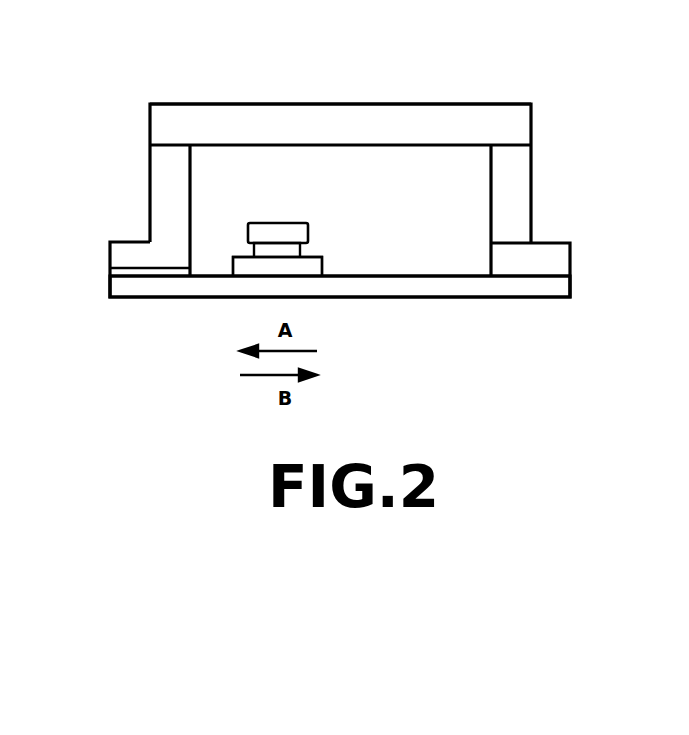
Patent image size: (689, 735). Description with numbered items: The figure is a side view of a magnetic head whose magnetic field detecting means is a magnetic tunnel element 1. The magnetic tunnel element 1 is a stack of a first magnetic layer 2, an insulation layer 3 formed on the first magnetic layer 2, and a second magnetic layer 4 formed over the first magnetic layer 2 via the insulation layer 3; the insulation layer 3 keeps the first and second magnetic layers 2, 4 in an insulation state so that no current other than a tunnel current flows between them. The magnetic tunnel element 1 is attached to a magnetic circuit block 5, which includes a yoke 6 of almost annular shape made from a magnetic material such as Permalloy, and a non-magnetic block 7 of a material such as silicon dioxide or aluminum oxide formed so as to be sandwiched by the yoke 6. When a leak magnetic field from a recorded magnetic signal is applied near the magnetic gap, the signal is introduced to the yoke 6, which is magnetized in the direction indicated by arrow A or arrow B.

The magnetic tunnel element 1 is at (241, 243).
The first magnetic layer 2 is at (310, 265).
The insulation layer 3 is at (296, 249).
The second magnetic layer 4 is at (291, 233).
The magnetic circuit block 5 is at (400, 100).
The yoke 6 is at (285, 127).
The non-magnetic block 7 is at (115, 271).